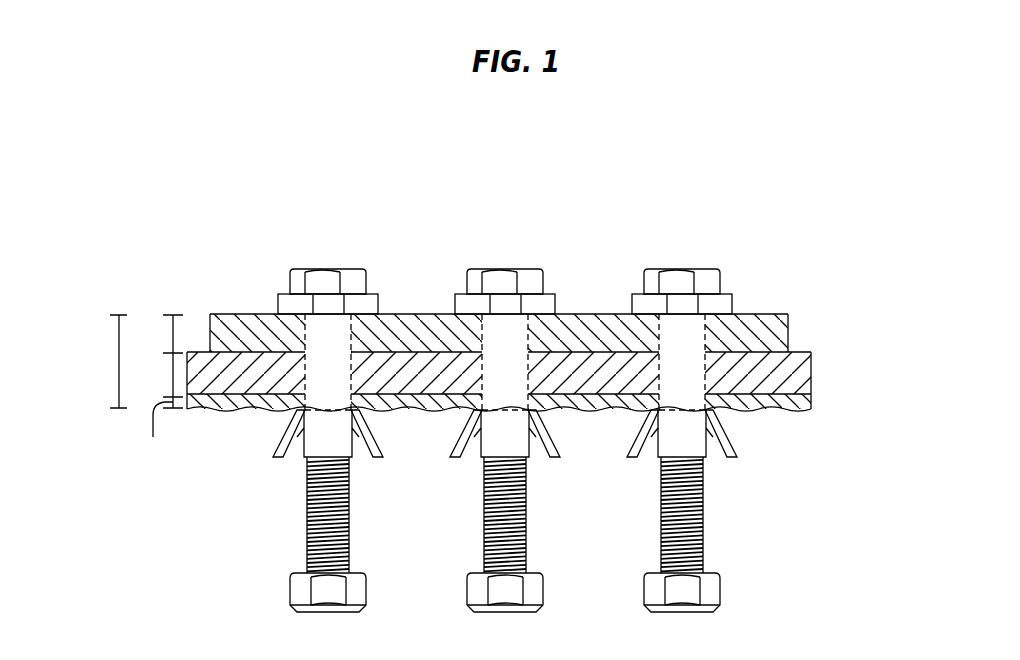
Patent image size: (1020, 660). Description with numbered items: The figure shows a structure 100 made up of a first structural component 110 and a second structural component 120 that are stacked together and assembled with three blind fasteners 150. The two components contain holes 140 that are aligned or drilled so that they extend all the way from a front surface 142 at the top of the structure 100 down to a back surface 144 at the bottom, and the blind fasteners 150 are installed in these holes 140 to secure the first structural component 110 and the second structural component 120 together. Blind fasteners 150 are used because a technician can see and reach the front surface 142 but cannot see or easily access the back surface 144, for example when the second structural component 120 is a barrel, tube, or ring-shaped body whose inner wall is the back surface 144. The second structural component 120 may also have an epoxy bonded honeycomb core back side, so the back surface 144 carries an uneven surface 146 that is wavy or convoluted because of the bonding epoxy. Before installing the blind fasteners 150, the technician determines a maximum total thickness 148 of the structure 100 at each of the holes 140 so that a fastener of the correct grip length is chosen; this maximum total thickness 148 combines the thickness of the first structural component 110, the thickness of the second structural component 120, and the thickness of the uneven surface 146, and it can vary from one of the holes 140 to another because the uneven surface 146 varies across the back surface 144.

The structure 100 is at (758, 126).
The first structural component 110 is at (788, 318).
The second structural component 120 is at (811, 367).
The holes 140 is at (334, 345).
The front surface 142 is at (783, 313).
The back surface 144 is at (805, 406).
The uneven surface 146 is at (770, 418).
The maximum total thickness 148 is at (119, 369).
The blind fasteners 150 is at (325, 245).